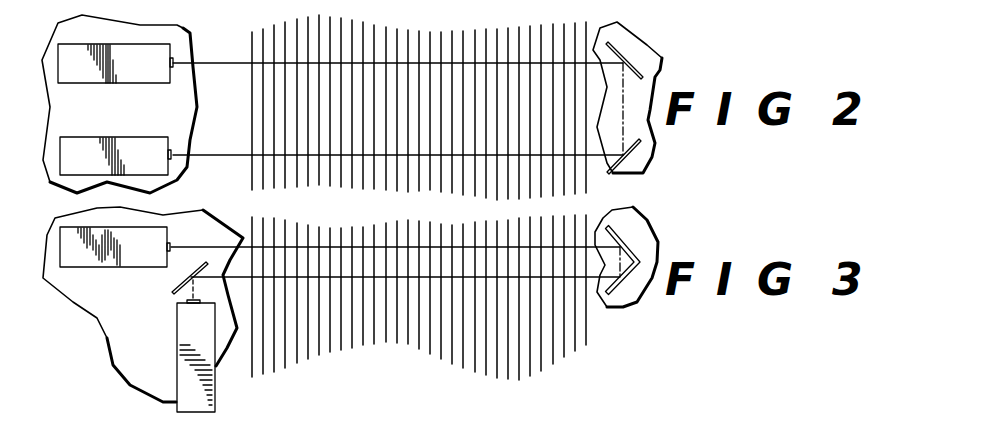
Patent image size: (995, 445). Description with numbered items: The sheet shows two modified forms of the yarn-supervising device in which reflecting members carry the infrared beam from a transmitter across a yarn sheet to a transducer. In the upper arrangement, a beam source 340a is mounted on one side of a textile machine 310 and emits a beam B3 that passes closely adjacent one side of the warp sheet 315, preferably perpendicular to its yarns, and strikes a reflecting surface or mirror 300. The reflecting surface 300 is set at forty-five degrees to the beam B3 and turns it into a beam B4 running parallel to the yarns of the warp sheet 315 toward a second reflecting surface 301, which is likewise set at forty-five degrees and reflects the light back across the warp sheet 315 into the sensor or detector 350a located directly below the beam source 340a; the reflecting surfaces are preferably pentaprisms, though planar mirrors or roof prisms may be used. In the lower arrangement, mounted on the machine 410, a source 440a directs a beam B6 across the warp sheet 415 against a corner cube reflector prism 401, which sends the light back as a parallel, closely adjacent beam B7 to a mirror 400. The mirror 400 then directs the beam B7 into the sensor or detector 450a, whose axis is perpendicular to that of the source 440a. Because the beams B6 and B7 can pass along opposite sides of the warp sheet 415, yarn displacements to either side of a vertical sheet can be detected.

In FIG. 2, the textile machine 310 is at (183, 30).
In FIG. 2, the beam source 340a is at (133, 78).
In FIG. 2, the sensor or detector 350a is at (110, 137).
In FIG. 2, the beam B3 is at (238, 64).
In FIG. 2, the warp sheet 315 is at (487, 40).
In FIG. 2, the reflecting surface or mirror 300 is at (637, 74).
In FIG. 2, the beam B4 is at (625, 97).
In FIG. 2, the second reflecting surface 301 is at (636, 148).
In FIG. 3, the textile machine 410 is at (98, 325).
In FIG. 3, the source 440a is at (130, 268).
In FIG. 3, the beam B6 is at (211, 230).
In FIG. 3, the mirror 400 is at (176, 284).
In FIG. 3, the sensor or detector 450a is at (178, 368).
In FIG. 3, the warp sheet 415 is at (440, 228).
In FIG. 3, the beam B7 is at (355, 280).
In FIG. 3, the corner cube reflector prism 401 is at (633, 246).